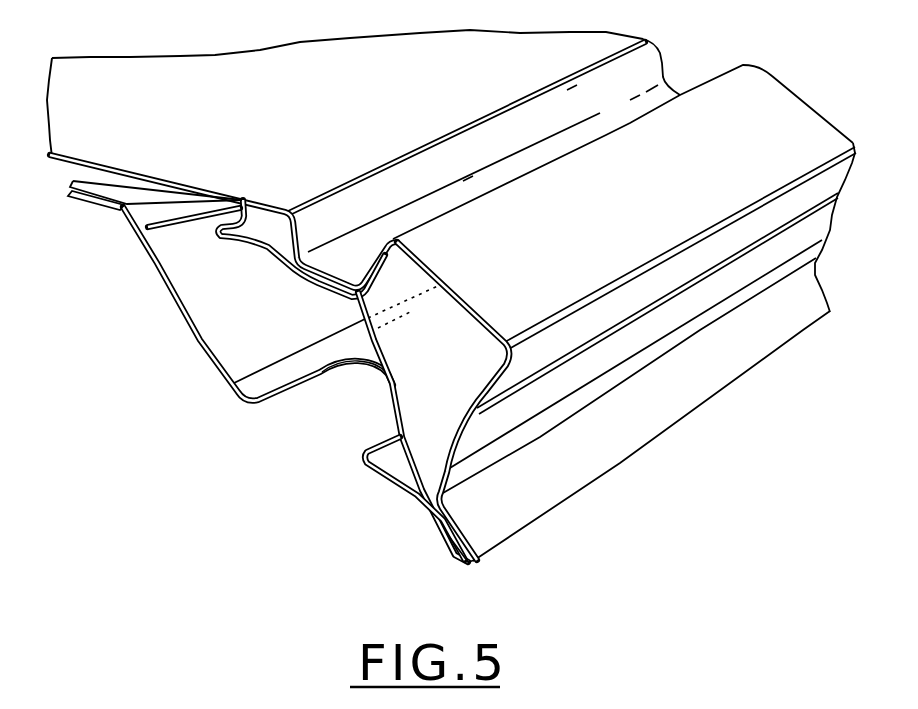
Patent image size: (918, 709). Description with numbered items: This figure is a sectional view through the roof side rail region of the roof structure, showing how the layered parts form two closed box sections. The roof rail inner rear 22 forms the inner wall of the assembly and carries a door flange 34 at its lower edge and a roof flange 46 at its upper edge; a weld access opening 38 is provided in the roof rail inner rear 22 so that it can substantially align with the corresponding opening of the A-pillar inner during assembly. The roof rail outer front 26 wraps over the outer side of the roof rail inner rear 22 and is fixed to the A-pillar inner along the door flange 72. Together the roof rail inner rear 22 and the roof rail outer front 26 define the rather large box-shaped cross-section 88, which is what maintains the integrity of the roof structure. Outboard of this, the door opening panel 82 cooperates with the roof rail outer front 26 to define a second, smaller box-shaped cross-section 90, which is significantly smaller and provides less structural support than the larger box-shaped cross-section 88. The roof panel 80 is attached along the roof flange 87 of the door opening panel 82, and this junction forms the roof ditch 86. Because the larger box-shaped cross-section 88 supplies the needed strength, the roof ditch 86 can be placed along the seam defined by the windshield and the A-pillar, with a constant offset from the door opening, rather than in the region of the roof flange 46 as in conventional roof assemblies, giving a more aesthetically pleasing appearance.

The roof panel 80 is at (200, 68).
The door opening panel 82 is at (530, 507).
The roof ditch 86 is at (342, 253).
The roof flange 87 is at (337, 284).
The smaller box-shaped cross-section 90 is at (453, 324).
The roof rail inner rear 22 is at (195, 298).
The roof flange 46 is at (97, 207).
The weld access opening 38 is at (340, 373).
The roof rail outer front 26 is at (393, 407).
The door flange 72 is at (435, 490).
The door flange 34 is at (450, 547).
The larger box-shaped cross-section 88 is at (195, 361).